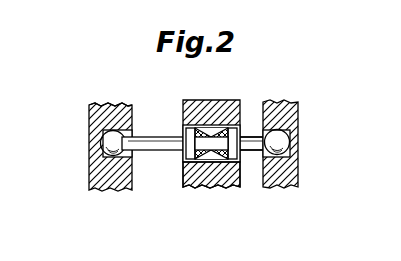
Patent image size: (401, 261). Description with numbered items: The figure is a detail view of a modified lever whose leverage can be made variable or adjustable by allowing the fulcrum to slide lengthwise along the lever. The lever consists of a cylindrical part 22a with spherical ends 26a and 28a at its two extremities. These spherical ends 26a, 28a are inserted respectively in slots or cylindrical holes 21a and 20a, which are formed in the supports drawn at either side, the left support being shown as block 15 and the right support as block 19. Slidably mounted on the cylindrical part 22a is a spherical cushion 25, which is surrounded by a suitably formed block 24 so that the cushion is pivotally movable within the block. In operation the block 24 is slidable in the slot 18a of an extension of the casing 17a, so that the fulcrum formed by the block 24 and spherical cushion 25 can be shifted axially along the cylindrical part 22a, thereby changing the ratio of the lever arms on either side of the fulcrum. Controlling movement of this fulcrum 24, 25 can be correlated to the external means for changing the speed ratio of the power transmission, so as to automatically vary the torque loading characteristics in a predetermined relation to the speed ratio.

The left support block 15 is at (92, 172).
The spherical end 26a is at (96, 105).
The slot or cylindrical hole 21a is at (101, 146).
The cylindrical part 22a is at (156, 149).
The block 24 is at (226, 105).
The spherical cushion 25 is at (203, 126).
The extension of the casing 17a is at (207, 187).
The slot 18a is at (240, 152).
The right support block 19 is at (290, 172).
The slot or cylindrical hole 20a is at (293, 132).
The spherical end 28a is at (276, 136).